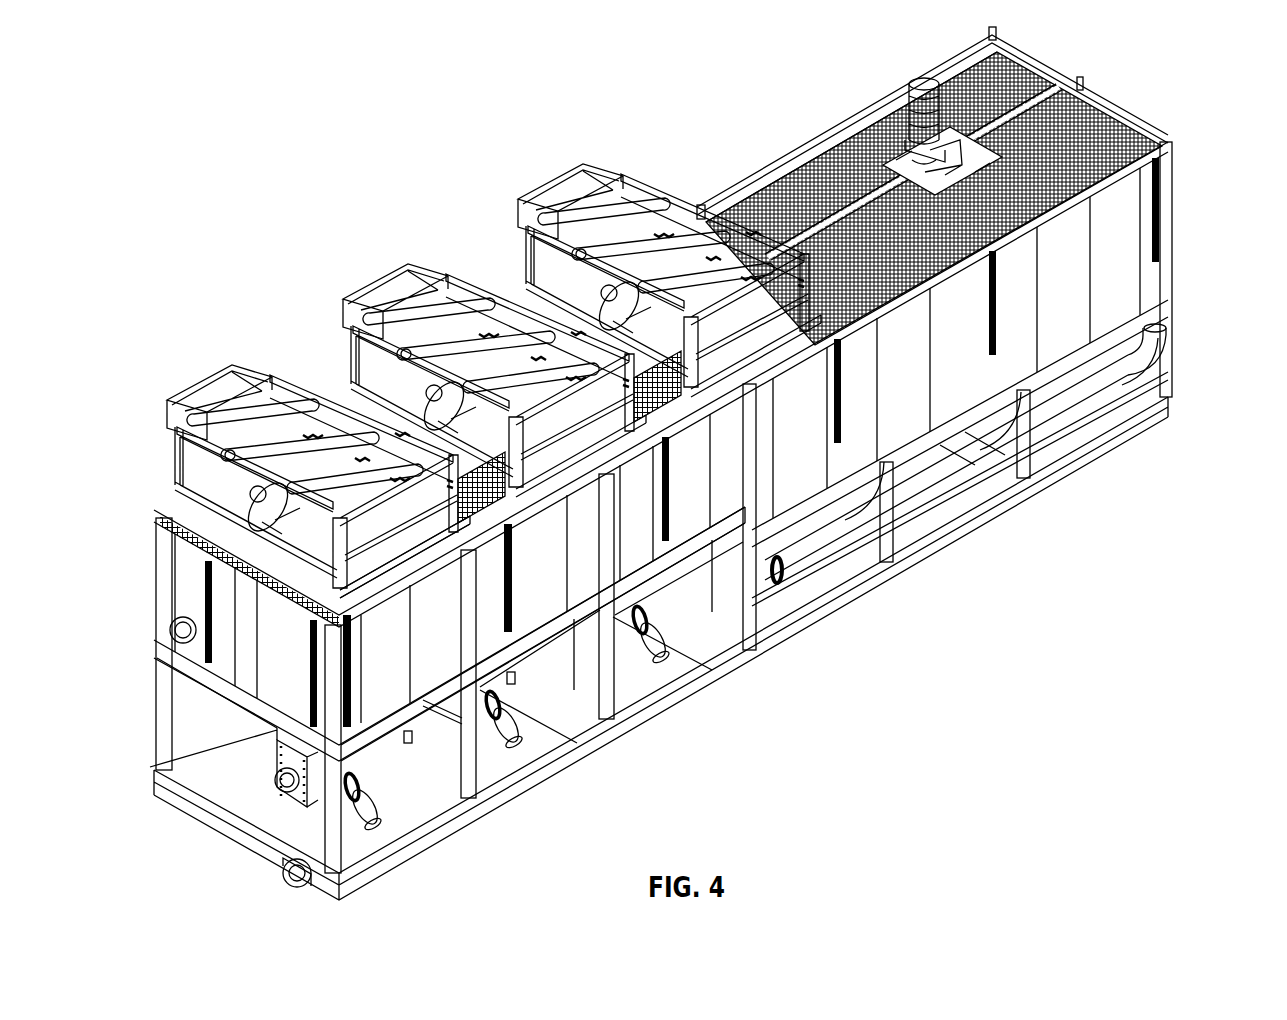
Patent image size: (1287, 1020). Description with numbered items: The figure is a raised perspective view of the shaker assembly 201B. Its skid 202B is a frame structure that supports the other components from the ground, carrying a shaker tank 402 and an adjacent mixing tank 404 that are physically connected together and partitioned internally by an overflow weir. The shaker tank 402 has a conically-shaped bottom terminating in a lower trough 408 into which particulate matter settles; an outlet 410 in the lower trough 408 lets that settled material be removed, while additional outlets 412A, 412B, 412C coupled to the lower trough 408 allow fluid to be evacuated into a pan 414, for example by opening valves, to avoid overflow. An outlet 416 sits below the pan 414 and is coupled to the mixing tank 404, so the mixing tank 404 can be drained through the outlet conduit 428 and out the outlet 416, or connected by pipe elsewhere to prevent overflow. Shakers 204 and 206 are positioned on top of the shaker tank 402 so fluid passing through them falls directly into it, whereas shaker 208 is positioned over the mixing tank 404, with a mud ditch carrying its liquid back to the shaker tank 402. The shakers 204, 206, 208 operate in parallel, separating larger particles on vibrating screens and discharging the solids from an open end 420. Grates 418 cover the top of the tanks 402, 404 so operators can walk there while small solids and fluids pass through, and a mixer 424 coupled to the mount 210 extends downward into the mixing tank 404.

The shaker assembly 201B is at (233, 197).
The skid 202B is at (1173, 228).
The shaker 204 is at (338, 398).
The shaker 206 is at (472, 283).
The shaker 208 is at (652, 178).
The mount 210 is at (890, 158).
The shaker tank 402 is at (262, 722).
The mixing tank 404 is at (925, 460).
The lower trough 408 is at (380, 710).
The outlet 410 is at (217, 832).
The outlet 412A is at (370, 815).
The outlet 412B is at (512, 735).
The outlet 412C is at (660, 652).
The pan 414 is at (563, 727).
The outlet 416 is at (290, 878).
The grates 418 is at (748, 197).
The open end 420 is at (413, 573).
The mixer 424 is at (924, 75).
The outlet conduit 428 is at (913, 517).